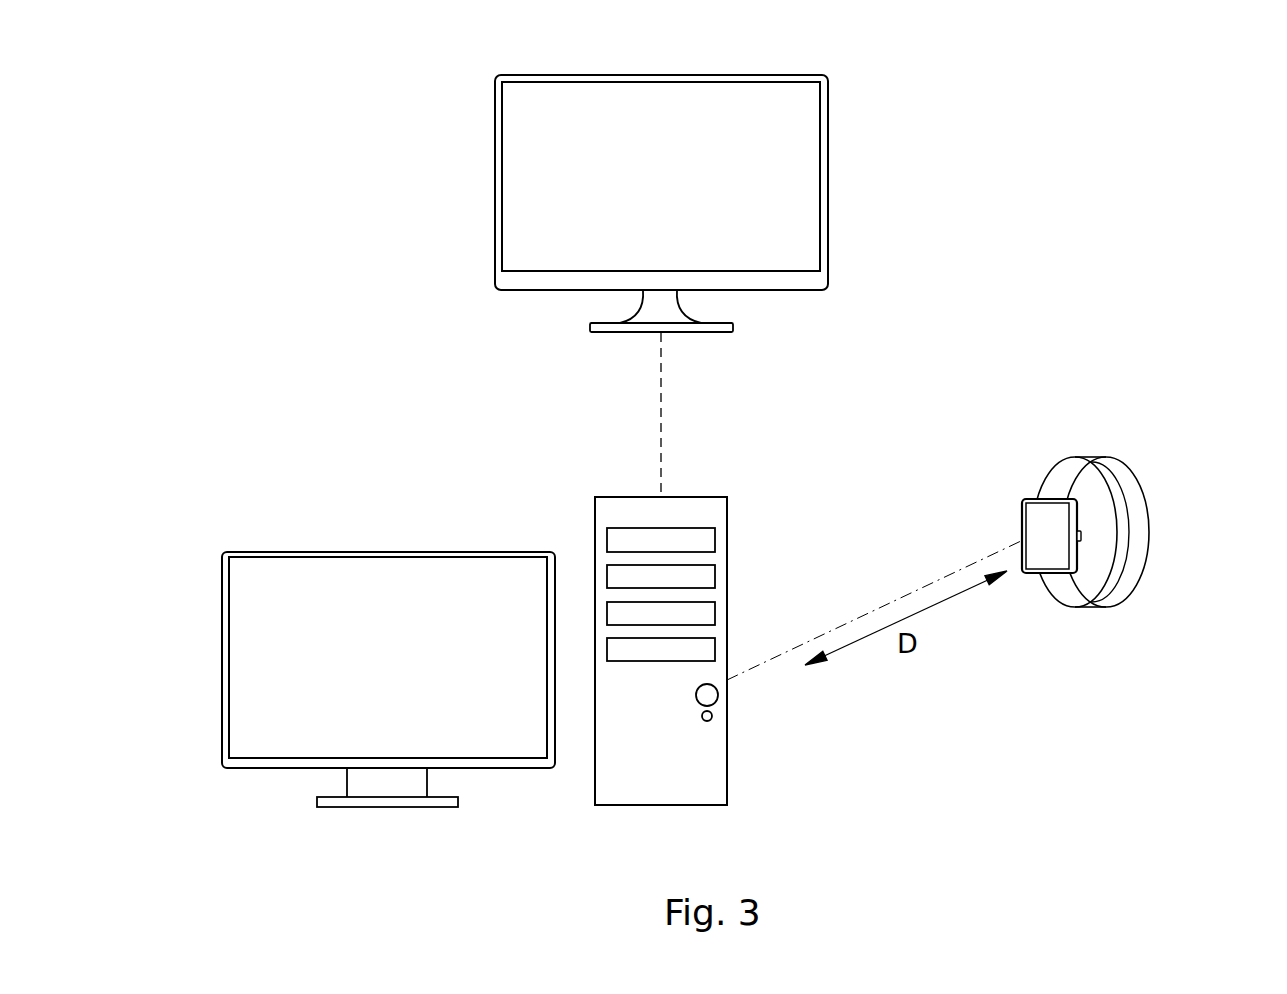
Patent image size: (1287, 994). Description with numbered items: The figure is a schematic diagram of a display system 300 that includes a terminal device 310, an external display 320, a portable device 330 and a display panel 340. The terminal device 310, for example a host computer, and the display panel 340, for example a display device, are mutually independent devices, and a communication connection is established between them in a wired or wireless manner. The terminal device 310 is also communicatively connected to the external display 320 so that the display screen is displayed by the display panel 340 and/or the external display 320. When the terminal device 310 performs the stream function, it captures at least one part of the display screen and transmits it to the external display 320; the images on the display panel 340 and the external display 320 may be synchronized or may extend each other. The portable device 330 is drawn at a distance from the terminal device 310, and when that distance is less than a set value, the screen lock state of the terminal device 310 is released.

The display system 300 is at (1258, 43).
The terminal device 310 is at (620, 505).
The external display 320 is at (495, 200).
The portable device 330 is at (1137, 530).
The display panel 340 is at (222, 675).